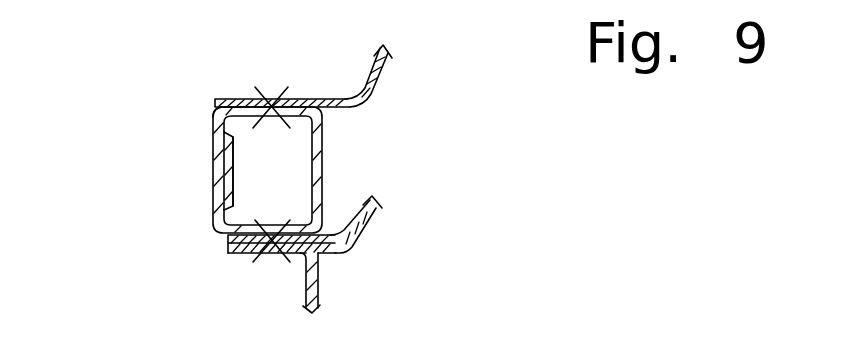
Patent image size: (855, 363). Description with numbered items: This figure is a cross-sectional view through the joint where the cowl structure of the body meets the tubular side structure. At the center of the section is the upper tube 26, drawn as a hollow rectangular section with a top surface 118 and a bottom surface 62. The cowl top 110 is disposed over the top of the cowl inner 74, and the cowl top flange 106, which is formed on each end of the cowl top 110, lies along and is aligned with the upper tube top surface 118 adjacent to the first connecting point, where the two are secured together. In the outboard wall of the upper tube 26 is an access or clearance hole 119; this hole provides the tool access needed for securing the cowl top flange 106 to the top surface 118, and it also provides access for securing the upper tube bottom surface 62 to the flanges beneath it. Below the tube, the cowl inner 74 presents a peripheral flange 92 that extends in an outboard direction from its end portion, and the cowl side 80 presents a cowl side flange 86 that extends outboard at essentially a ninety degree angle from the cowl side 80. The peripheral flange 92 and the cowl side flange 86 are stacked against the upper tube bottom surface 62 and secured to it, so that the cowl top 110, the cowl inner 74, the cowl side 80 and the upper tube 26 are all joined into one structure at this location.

The upper tube 26 is at (100, 152).
The upper tube bottom surface 62 is at (218, 233).
The cowl inner 74 is at (352, 226).
The cowl side 80 is at (306, 280).
The cowl side flange 86 is at (243, 254).
The peripheral flange 92 is at (228, 246).
The cowl top flange 106 is at (235, 100).
The cowl top 110 is at (360, 80).
The upper tube top surface 118 is at (217, 112).
The access hole 119 is at (196, 171).